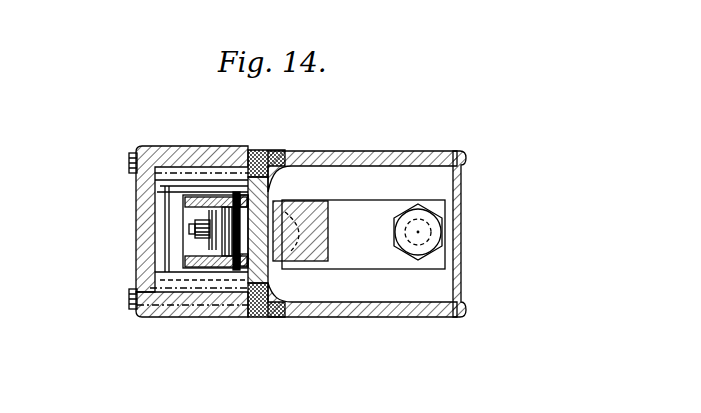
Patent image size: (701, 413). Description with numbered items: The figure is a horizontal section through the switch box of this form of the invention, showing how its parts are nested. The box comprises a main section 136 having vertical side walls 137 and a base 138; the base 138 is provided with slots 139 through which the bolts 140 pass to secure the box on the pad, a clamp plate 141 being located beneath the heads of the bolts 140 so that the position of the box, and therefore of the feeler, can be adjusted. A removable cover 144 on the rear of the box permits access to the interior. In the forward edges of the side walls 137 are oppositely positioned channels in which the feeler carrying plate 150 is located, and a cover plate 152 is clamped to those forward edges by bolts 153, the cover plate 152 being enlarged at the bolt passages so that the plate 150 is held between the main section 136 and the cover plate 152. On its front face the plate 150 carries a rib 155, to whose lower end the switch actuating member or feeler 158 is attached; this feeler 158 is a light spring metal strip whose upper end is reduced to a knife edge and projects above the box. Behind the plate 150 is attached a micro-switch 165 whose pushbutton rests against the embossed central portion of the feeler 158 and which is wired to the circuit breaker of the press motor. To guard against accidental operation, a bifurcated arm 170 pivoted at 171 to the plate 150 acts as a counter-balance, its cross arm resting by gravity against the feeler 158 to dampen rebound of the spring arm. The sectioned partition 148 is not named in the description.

The main section 136 is at (442, 180).
The vertical side walls 137 is at (368, 164).
The base 138 is at (446, 279).
The slots 139 is at (446, 218).
The bolts 140 is at (441, 237).
The clamp plate 141 is at (383, 260).
The removable cover 144 is at (461, 195).
The partition wall 148 is at (270, 162).
The feeler carrying plate 150 is at (246, 294).
The cover plate 152 is at (139, 222).
The bolts 153 is at (130, 306).
The rib 155 is at (252, 266).
The switch actuating member or feeler 158 is at (196, 229).
The micro-switch 165 is at (318, 200).
The bifurcated arm 170 is at (192, 266).
The pivot 171 is at (236, 191).